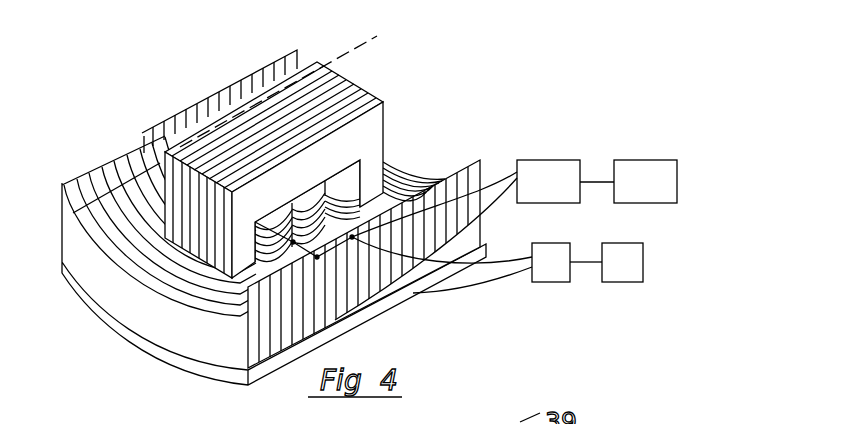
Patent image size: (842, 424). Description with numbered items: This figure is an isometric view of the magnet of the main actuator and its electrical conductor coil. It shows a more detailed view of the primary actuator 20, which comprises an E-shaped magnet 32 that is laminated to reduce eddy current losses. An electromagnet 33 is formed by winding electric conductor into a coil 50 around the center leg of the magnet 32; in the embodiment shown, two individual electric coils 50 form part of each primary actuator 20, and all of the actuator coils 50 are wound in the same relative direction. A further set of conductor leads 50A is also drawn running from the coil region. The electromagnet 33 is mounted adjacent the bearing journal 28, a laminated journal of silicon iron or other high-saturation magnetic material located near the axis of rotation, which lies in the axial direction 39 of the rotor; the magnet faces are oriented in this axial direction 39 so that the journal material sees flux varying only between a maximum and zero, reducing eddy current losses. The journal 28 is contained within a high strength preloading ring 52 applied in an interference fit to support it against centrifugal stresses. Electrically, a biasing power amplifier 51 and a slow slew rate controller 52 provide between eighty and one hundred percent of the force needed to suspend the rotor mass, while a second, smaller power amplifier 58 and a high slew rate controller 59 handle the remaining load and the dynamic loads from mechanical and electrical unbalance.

The actuator 20 is at (152, 140).
The bearing journal 28 is at (150, 318).
The E-shaped magnet 32 is at (148, 157).
The electromagnet 33 is at (377, 137).
The axial direction 39 is at (367, 45).
The coil 50 is at (507, 178).
The lead wires 50A is at (483, 287).
The biasing power amplifier 51 is at (548, 198).
The preloading ring 52 is at (137, 420).
The power amplifier 58 is at (551, 278).
The high slew rate controller 59 is at (606, 278).